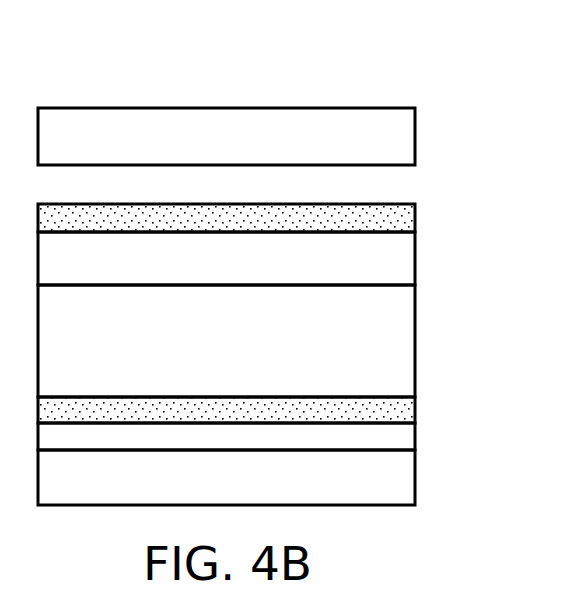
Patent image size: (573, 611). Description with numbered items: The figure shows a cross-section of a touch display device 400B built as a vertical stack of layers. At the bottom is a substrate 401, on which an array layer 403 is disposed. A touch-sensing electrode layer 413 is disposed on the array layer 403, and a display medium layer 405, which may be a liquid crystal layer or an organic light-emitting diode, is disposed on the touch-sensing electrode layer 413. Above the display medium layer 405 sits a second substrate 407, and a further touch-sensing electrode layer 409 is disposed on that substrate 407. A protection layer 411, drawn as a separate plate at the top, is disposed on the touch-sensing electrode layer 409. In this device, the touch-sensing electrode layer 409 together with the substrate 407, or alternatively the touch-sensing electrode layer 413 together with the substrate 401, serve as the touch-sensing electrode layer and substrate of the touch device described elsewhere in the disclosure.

The touch display device 400B is at (472, 85).
The substrate 401 is at (418, 477).
The array layer 403 is at (418, 436).
The touch-sensing electrode layer 413 is at (418, 411).
The display medium layer 405 is at (418, 342).
The substrate 407 is at (418, 258).
The touch-sensing electrode layer 409 is at (418, 220).
The protection layer 411 is at (418, 137).